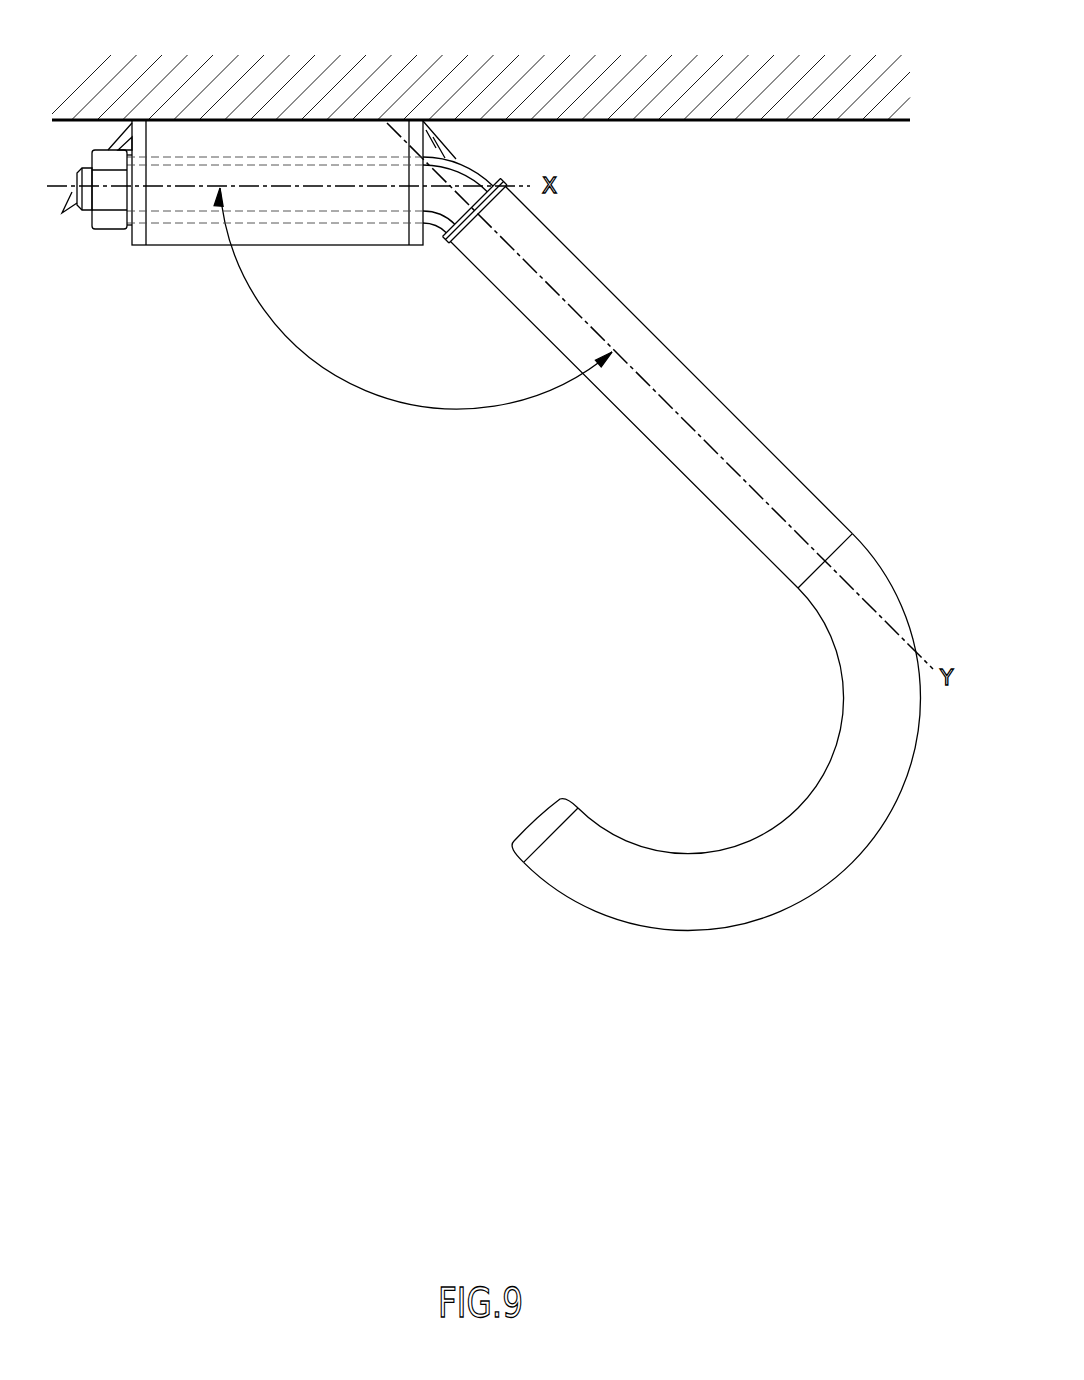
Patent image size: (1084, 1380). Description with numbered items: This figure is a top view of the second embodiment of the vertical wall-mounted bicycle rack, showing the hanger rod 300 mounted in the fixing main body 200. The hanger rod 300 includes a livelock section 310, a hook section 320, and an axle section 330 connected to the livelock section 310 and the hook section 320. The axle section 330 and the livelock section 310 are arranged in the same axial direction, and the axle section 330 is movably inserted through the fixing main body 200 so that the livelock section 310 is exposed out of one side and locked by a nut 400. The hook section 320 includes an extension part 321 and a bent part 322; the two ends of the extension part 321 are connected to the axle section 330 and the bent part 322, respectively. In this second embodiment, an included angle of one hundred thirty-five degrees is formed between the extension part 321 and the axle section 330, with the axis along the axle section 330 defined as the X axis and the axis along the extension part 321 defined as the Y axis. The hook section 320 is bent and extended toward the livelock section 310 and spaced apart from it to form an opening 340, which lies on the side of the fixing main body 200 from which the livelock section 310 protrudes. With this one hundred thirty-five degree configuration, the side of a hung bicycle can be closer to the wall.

The fixing main body 200 is at (190, 250).
The hanger rod 300 is at (671, 604).
The livelock section 310 is at (77, 222).
The hook section 320 is at (716, 793).
The extension part 321 is at (703, 380).
The bent part 322 is at (732, 920).
The axle section 330 is at (260, 157).
The opening 340 is at (400, 712).
The nut 400 is at (105, 229).